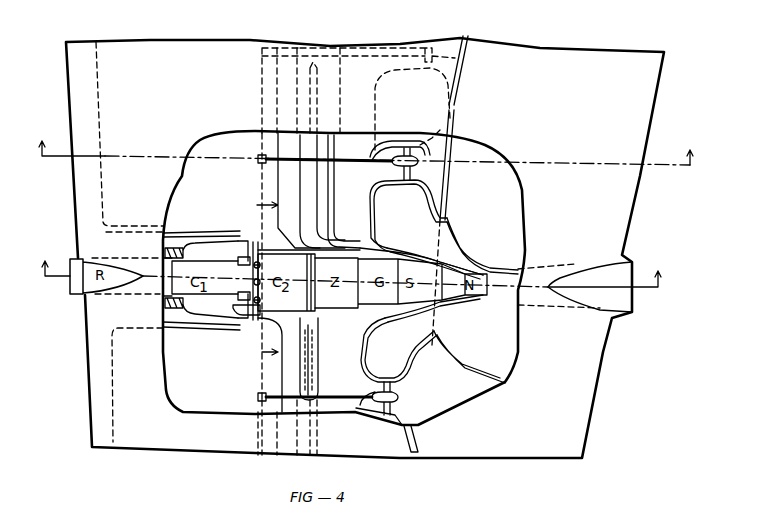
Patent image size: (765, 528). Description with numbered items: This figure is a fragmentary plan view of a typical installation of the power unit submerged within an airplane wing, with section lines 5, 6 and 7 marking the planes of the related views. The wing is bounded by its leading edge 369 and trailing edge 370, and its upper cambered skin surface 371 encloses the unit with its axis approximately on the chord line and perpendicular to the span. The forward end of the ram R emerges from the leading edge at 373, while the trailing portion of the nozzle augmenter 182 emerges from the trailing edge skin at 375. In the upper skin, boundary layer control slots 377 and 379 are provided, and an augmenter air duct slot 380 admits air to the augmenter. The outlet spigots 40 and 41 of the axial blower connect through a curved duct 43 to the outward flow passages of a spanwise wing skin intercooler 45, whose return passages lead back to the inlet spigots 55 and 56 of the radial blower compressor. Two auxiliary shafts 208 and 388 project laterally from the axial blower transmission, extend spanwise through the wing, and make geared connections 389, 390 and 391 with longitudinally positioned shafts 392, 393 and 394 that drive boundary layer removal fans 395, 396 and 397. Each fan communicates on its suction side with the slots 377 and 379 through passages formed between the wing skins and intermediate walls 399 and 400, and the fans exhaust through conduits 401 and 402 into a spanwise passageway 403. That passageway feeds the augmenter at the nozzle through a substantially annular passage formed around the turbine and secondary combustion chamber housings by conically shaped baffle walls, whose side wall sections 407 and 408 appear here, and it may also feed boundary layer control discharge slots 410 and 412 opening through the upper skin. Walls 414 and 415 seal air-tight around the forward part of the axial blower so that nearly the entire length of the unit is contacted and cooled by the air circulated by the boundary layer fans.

The section line 5- 5 is at (366, 143).
The section line 6- 6 is at (350, 266).
The section line 7- 7 is at (288, 272).
The outlet spigot 40 is at (243, 263).
The outlet spigot 41 is at (245, 296).
The curved duct 43 is at (245, 320).
The wing skin intercooler 45 is at (113, 370).
The inlet spigot 55 is at (262, 262).
The inlet spigot 56 is at (262, 302).
The nozzle augmenter 182 is at (540, 265).
The auxiliary shaft 208 is at (260, 195).
The leading edge 369 is at (100, 363).
The trailing edge 370 is at (597, 372).
The upper cambered skin surface 371 is at (559, 383).
The ram emergence point 373 is at (147, 291).
The augmenter emergence point 375 is at (545, 297).
The boundary layer control slot 377 is at (420, 434).
The boundary layer control slot 379 is at (453, 116).
The augmenter air duct slot 380 is at (446, 229).
The auxiliary shaft 388 is at (258, 375).
The geared connection 389 is at (256, 397).
The geared connection 390 is at (257, 157).
The geared connection 391 is at (260, 50).
The longitudinally positioned shaft 392 is at (360, 394).
The longitudinally positioned shaft 393 is at (380, 158).
The longitudinally positioned shaft 394 is at (388, 54).
The boundary layer removal fan 395 is at (396, 399).
The boundary layer removal fan 396 is at (422, 167).
The boundary layer removal fan 397 is at (456, 62).
The intermediate wall 399 is at (441, 123).
The intermediate wall 400 is at (425, 197).
The exhaust conduit 401 is at (368, 380).
The exhaust conduit 402 is at (385, 173).
The spanwise passageway 403 is at (368, 118).
The baffle side wall section 407 is at (415, 253).
The baffle side wall section 408 is at (388, 322).
The boundary layer control discharge slot 410 is at (318, 350).
The boundary layer control discharge slot 412 is at (330, 198).
The sealing wall 414 is at (178, 323).
The sealing wall 415 is at (186, 240).